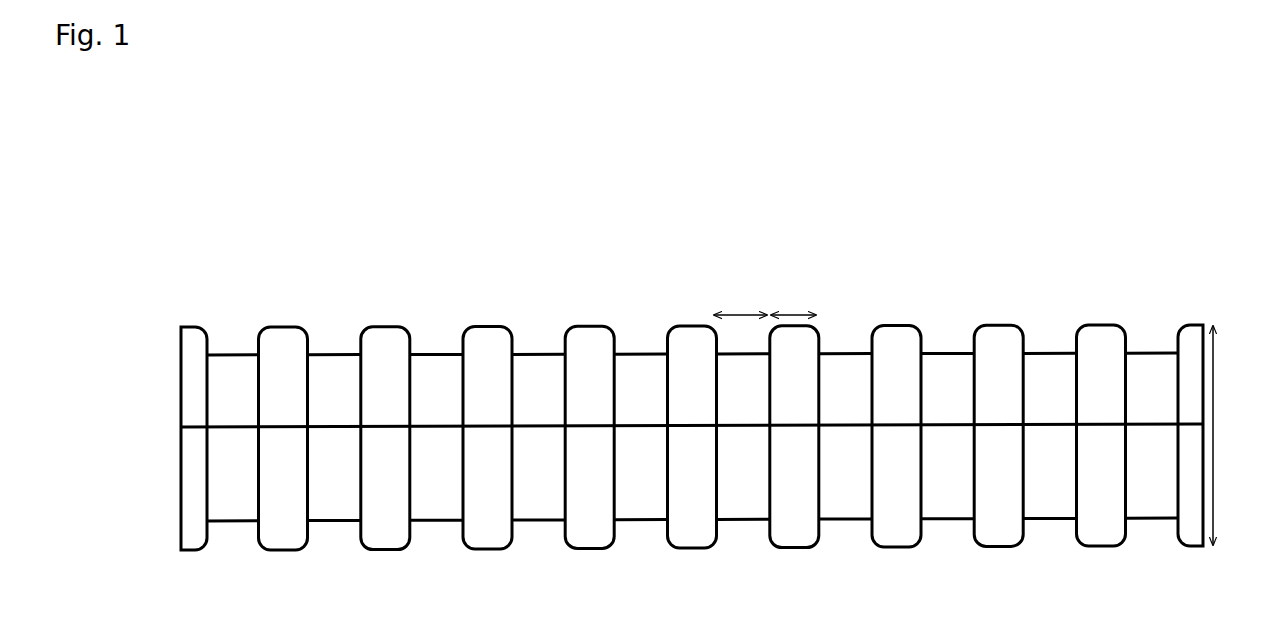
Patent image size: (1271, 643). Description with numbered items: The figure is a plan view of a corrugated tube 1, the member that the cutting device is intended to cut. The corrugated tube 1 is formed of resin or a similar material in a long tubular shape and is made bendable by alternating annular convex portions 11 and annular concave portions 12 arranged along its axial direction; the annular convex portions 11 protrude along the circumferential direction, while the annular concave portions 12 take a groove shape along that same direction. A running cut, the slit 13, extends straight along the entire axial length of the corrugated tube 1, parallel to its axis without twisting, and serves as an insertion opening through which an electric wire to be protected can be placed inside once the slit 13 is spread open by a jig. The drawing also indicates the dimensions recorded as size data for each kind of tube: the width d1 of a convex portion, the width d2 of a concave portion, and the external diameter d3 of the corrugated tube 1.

The corrugated tube 1 is at (922, 252).
The annular convex portion 11 is at (796, 548).
The annular concave portion 12 is at (744, 521).
The slit 13 is at (1155, 420).
The width of a convex portion d1 is at (795, 311).
The width of a concave portion d2 is at (743, 311).
The external diameter d3 is at (1215, 432).